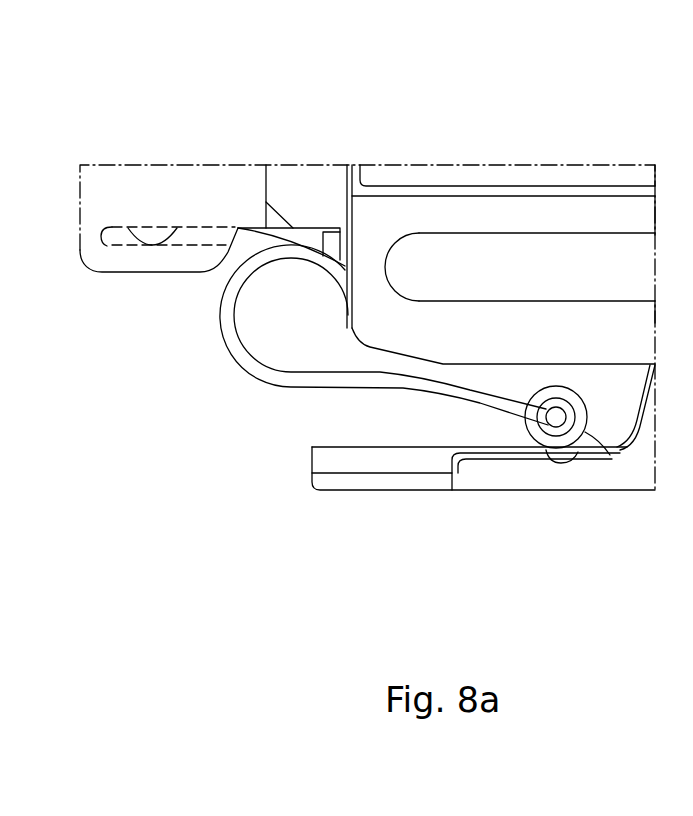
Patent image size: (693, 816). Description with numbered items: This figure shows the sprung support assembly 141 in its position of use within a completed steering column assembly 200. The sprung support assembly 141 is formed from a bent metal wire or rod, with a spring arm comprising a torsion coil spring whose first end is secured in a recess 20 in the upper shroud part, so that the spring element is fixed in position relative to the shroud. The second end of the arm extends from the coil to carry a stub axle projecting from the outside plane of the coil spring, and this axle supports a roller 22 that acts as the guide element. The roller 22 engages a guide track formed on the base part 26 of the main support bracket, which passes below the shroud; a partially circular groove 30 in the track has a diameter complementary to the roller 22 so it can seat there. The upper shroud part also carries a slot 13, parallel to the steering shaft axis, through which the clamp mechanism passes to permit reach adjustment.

The slot 13 is at (592, 270).
The recess 20 is at (152, 232).
The roller 22 is at (610, 457).
The base part 26 is at (385, 480).
The partially circular groove 30 is at (562, 463).
The sprung support assembly 141 is at (218, 374).
The steering column assembly 200 is at (498, 175).